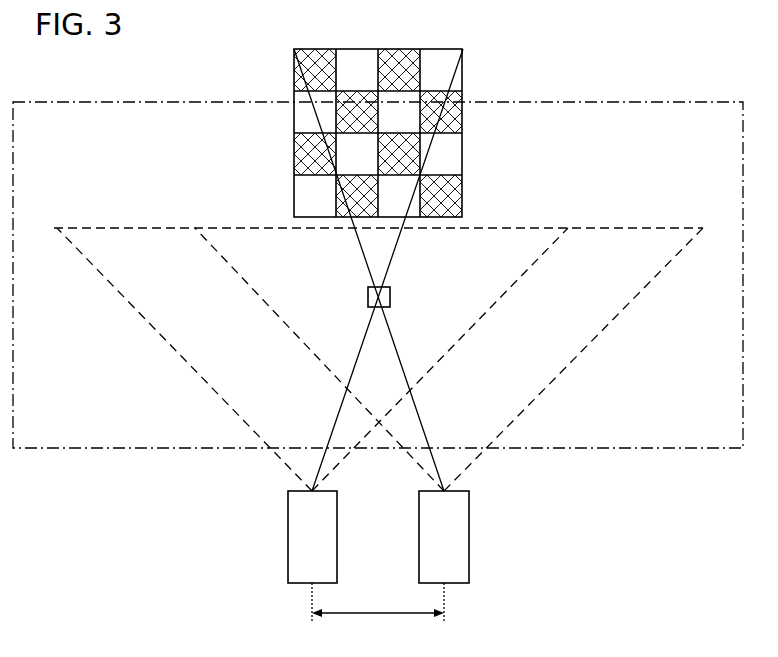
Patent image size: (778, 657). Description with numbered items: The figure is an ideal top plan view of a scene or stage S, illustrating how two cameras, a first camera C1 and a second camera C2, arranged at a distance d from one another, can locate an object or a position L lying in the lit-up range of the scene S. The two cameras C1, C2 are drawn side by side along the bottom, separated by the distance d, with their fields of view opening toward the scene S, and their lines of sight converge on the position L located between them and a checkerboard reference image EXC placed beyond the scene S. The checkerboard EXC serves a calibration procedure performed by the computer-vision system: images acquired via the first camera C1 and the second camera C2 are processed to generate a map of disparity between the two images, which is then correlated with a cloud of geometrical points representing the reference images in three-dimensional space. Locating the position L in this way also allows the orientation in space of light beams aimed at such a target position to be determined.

The checkerboard reference image EXC is at (474, 83).
The scene or stage S is at (236, 217).
The object or position L is at (391, 297).
The first camera C1 is at (298, 546).
The second camera C2 is at (455, 537).
The distance between the cameras d is at (378, 602).